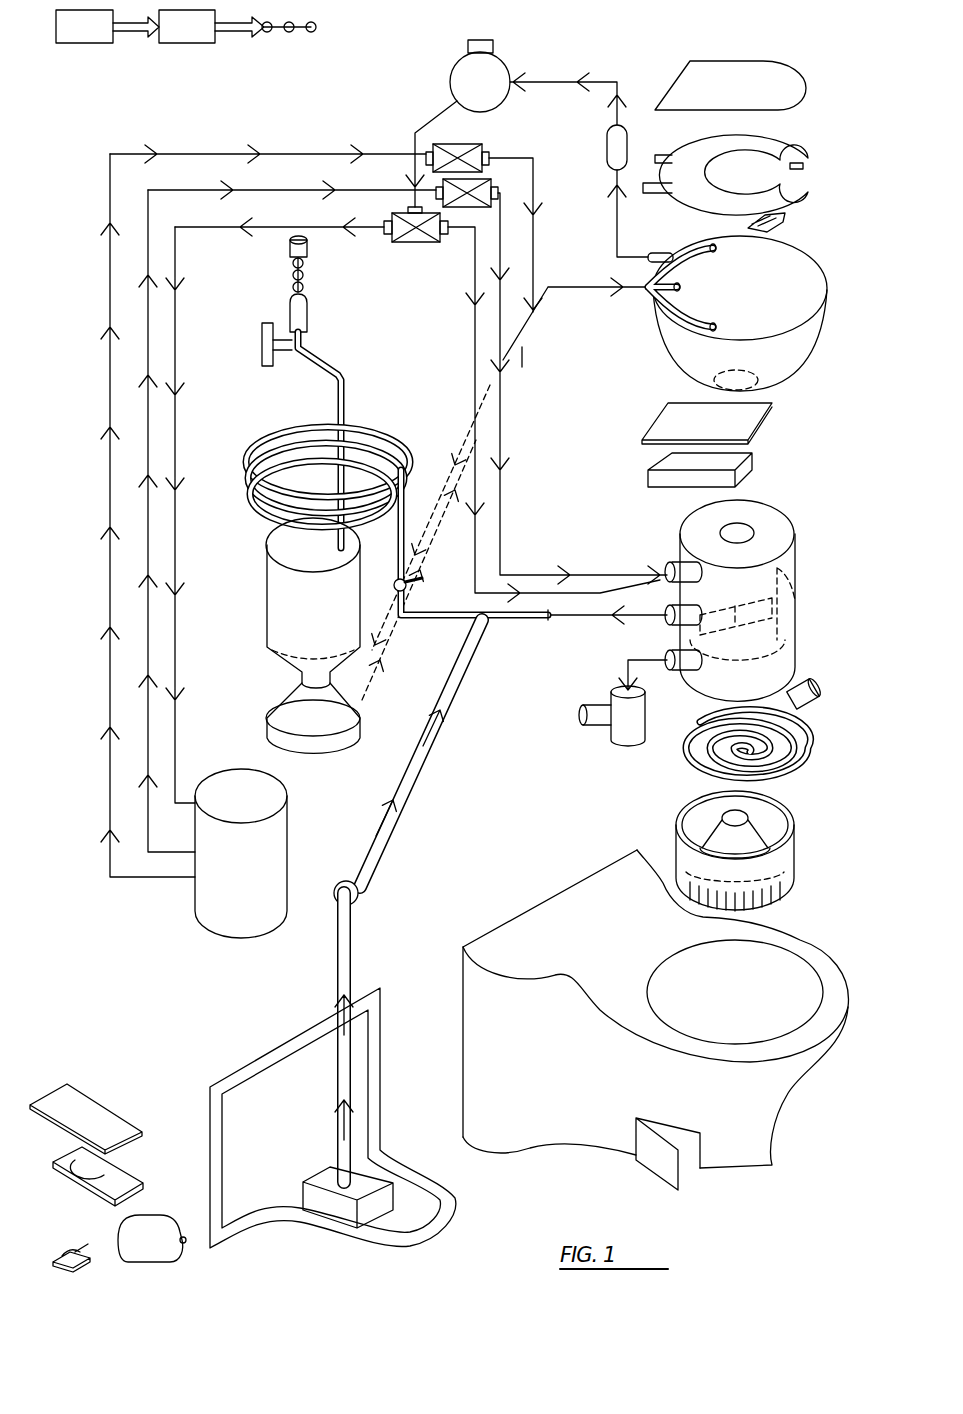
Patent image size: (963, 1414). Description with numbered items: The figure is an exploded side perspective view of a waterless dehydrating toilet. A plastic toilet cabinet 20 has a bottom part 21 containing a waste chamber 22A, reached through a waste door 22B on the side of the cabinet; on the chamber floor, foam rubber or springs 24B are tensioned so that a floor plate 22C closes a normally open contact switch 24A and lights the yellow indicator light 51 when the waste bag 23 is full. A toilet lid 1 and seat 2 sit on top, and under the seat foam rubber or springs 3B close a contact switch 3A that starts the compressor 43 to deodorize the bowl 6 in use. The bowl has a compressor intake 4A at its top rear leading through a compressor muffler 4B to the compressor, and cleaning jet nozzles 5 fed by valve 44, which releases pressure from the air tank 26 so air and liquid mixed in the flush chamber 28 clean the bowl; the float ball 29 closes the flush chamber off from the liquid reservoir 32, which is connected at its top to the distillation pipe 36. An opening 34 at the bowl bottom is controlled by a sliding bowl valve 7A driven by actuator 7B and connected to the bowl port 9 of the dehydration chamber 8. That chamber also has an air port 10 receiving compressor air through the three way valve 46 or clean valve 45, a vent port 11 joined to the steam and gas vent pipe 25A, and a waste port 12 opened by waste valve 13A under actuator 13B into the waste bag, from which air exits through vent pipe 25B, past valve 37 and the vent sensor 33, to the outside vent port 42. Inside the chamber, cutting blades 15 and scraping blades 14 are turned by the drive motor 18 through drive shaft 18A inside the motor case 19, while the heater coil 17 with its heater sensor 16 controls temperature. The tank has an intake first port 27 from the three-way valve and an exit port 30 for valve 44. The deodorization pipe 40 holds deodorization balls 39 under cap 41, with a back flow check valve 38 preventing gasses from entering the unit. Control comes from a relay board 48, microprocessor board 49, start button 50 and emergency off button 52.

The toilet lid 1 is at (785, 64).
The seat 2 is at (735, 188).
The contact switch 3A is at (784, 226).
The foam rubber or springs 3B is at (806, 166).
The compressor intake 4A is at (661, 253).
The compressor muffler 4B is at (629, 140).
The cleaning jet nozzles 5 is at (718, 325).
The toilet bowl 6 is at (816, 340).
The sliding bowl valve 7A is at (773, 415).
The actuator 7B is at (756, 466).
The dehydration chamber 8 is at (791, 520).
The bowl port 9 is at (715, 530).
The air port 10 is at (669, 562).
The vent port 11 is at (668, 610).
The waste port 12 is at (668, 652).
The waste valve 13A is at (633, 748).
The actuator 13B is at (605, 708).
The scraping blades 14 is at (800, 612).
The cutting blades 15 is at (798, 640).
The heater sensor 16 is at (815, 700).
The heater coil 17 is at (804, 748).
The drive motor 18 is at (800, 846).
The drive shaft 18A is at (754, 814).
The motor case 19 is at (797, 862).
The toilet cabinet 20 is at (660, 1104).
The bottom part 21 is at (240, 1080).
The waste chamber 22A is at (345, 1215).
The waste door 22B is at (656, 1178).
The floor plate 22C is at (120, 1118).
The waste bag 23 is at (135, 1256).
The normally open contact switch 24A is at (70, 1250).
The foam rubber or springs 24B is at (114, 1160).
The steam and gas vent pipe 25A is at (548, 622).
The vent pipe 25B is at (334, 978).
The air tank 26 is at (229, 887).
The first port 27 is at (185, 800).
The flush chamber 28 is at (301, 734).
The float ball 29 is at (275, 662).
The exit port 30 is at (170, 880).
The liquid reservoir 32 is at (301, 631).
The vent sensor 33 is at (398, 580).
The opening 34 is at (793, 377).
The distillation pipe 36 is at (265, 445).
The valve 37 is at (362, 900).
The back flow check valve 38 is at (350, 382).
The deodorization balls 39 is at (291, 283).
The deodorization pipe 40 is at (290, 306).
The cap 41 is at (290, 250).
The vent port 42 is at (262, 340).
The compressor 43 is at (507, 66).
The valve 44 is at (480, 144).
The clean valve 45 is at (495, 180).
The three way valve 46 is at (410, 243).
The relay board 48 is at (98, 45).
The microprocessor board 49 is at (190, 45).
The start button 50 is at (267, 33).
The yellow indicator light 51 is at (289, 33).
The emergency off button 52 is at (311, 33).